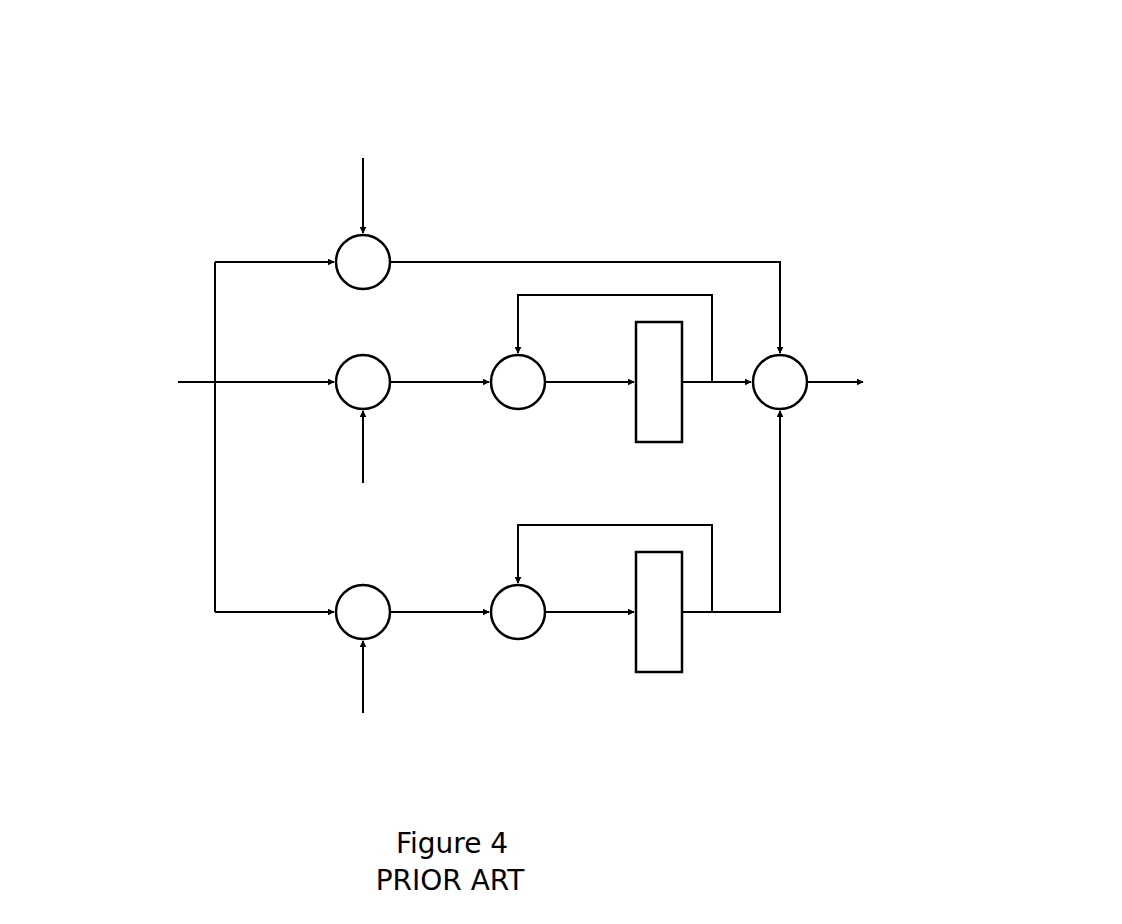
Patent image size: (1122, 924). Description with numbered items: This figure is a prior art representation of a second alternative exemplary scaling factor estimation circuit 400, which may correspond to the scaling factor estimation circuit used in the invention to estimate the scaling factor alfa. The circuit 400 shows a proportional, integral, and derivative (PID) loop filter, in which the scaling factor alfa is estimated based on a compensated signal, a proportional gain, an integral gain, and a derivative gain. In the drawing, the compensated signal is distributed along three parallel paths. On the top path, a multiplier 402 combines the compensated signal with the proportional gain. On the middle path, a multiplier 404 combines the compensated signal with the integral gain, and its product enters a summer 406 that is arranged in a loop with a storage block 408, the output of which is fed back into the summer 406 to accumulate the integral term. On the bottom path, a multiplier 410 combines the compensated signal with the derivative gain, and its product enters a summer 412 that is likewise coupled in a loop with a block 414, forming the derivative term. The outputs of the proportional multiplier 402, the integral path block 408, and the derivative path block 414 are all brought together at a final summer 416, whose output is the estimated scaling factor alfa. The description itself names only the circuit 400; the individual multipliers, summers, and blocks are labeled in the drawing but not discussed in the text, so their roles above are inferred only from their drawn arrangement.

The scaling factor estimation circuit 400 is at (749, 55).
The proportional gain multiplier 402 is at (382, 237).
The integral gain multiplier 404 is at (382, 357).
The integral path summer 406 is at (519, 410).
The integral path delay block 408 is at (659, 442).
The derivative gain multiplier 410 is at (382, 587).
The derivative path summer 412 is at (519, 640).
The derivative path delay block 414 is at (659, 672).
The output summer 416 is at (790, 408).